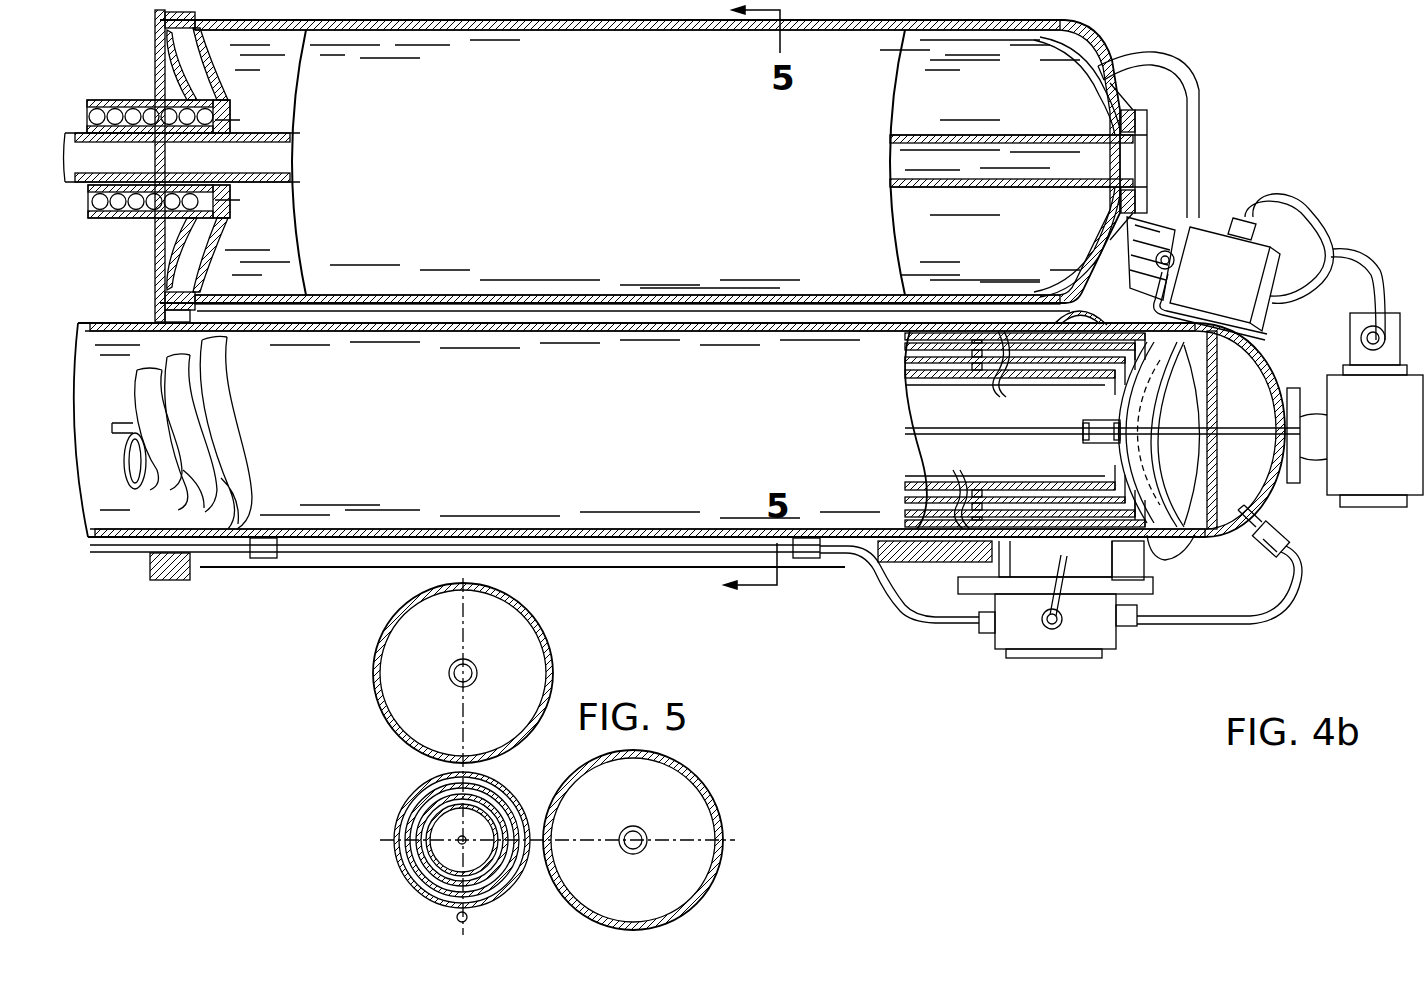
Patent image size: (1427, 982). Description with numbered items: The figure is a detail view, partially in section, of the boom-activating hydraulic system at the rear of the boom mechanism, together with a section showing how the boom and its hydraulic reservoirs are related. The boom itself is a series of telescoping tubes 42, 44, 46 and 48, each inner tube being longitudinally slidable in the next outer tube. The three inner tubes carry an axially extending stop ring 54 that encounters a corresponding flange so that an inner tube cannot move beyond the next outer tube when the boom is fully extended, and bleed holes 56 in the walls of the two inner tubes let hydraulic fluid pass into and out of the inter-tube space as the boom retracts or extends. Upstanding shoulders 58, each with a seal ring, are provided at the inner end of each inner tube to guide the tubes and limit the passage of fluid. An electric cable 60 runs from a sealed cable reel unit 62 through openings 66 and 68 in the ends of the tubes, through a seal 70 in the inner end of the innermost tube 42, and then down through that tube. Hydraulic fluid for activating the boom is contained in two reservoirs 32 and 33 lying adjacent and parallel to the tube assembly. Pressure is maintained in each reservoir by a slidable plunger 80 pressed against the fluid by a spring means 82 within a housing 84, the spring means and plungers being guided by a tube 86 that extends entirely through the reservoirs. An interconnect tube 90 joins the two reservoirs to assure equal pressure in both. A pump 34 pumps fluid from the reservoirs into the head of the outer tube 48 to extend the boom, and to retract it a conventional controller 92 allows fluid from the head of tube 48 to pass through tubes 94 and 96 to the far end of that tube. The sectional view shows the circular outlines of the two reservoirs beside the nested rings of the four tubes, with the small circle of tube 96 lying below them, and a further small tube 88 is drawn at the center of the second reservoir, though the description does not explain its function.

In FIG. 4b, the reservoir 32 is at (1088, 34).
In FIG. 5, the reservoir 32 is at (555, 667).
In FIG. 4b, the reservoir 33 is at (325, 574).
In FIG. 5, the reservoir 33 is at (722, 819).
In FIG. 4b, the pump 34 is at (1206, 228).
In FIG. 4b, the innermost tube 42 is at (136, 492).
In FIG. 5, the innermost tube 42 is at (428, 864).
In FIG. 4b, the tube 44 is at (176, 502).
In FIG. 5, the tube 44 is at (401, 862).
In FIG. 4b, the tube 46 is at (218, 514).
In FIG. 5, the tube 46 is at (398, 829).
In FIG. 4b, the outer tube 48 is at (260, 560).
In FIG. 5, the outer tube 48 is at (410, 801).
In FIG. 4b, the stop ring 54 is at (950, 500).
In FIG. 4b, the bleed holes 56 is at (994, 372).
In FIG. 4b, the upstanding shoulders 58 is at (1076, 564).
In FIG. 4b, the electric cable 60 is at (125, 428).
In FIG. 5, the electric cable 60 is at (466, 838).
In FIG. 4b, the sealed cable reel unit 62 is at (1322, 488).
In FIG. 4b, the opening 66 is at (1140, 412).
In FIG. 4b, the opening 68 is at (1155, 449).
In FIG. 4b, the seal 70 is at (1085, 423).
In FIG. 4b, the slidable plunger 80 is at (228, 222).
In FIG. 4b, the spring means 82 is at (93, 210).
In FIG. 4b, the housing 84 is at (107, 100).
In FIG. 4b, the tube 86 is at (952, 138).
In FIG. 5, the tube 86 is at (473, 667).
In FIG. 5, the tube 88 is at (643, 831).
In FIG. 4b, the interconnect tube 90 is at (1184, 62).
In FIG. 4b, the controller 92 is at (1092, 656).
In FIG. 4b, the tube 94 is at (1298, 578).
In FIG. 4b, the tube 96 is at (900, 597).
In FIG. 5, the tube 96 is at (469, 916).